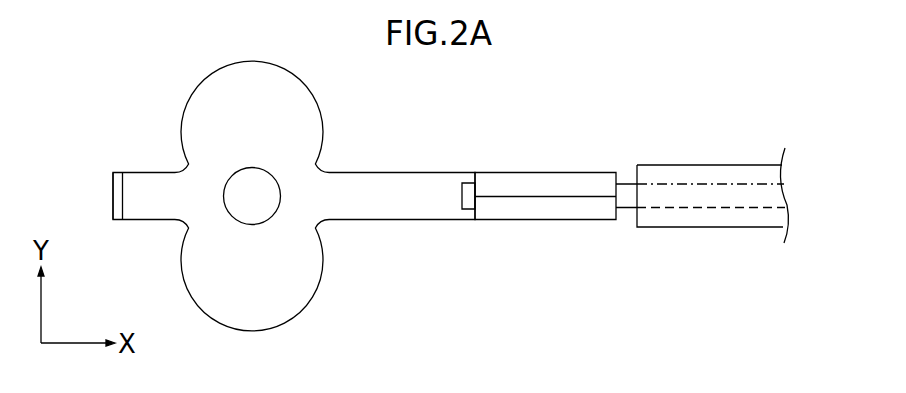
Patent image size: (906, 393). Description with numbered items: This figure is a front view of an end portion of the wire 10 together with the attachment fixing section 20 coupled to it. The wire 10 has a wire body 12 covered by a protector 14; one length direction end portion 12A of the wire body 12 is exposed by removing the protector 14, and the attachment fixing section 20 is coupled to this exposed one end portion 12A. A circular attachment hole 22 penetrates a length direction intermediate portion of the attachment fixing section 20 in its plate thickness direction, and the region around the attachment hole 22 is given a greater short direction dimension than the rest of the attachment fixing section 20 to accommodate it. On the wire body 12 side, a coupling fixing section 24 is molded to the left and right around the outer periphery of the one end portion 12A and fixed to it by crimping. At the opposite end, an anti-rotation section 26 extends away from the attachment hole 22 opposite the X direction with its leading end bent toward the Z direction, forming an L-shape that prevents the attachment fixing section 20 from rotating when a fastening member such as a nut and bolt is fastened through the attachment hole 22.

The wire 10 is at (726, 156).
The wire body 12 is at (672, 208).
The one end portion 12A is at (470, 191).
The protector 14 is at (732, 217).
The attachment fixing section 20 is at (288, 138).
The attachment hole 22 is at (267, 207).
The coupling fixing section 24 is at (548, 208).
The anti-rotation section 26 is at (114, 181).